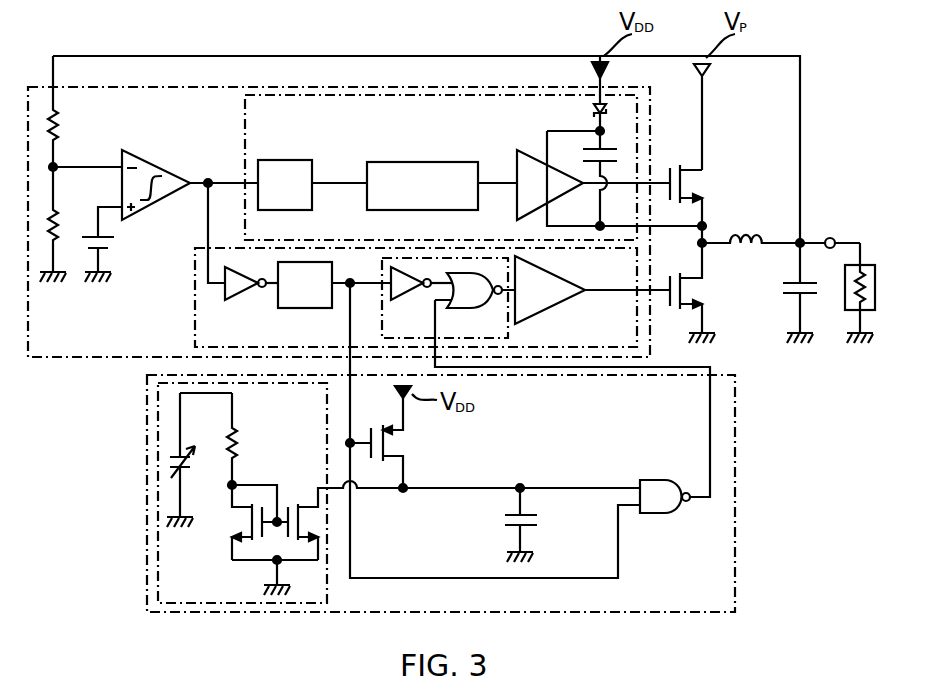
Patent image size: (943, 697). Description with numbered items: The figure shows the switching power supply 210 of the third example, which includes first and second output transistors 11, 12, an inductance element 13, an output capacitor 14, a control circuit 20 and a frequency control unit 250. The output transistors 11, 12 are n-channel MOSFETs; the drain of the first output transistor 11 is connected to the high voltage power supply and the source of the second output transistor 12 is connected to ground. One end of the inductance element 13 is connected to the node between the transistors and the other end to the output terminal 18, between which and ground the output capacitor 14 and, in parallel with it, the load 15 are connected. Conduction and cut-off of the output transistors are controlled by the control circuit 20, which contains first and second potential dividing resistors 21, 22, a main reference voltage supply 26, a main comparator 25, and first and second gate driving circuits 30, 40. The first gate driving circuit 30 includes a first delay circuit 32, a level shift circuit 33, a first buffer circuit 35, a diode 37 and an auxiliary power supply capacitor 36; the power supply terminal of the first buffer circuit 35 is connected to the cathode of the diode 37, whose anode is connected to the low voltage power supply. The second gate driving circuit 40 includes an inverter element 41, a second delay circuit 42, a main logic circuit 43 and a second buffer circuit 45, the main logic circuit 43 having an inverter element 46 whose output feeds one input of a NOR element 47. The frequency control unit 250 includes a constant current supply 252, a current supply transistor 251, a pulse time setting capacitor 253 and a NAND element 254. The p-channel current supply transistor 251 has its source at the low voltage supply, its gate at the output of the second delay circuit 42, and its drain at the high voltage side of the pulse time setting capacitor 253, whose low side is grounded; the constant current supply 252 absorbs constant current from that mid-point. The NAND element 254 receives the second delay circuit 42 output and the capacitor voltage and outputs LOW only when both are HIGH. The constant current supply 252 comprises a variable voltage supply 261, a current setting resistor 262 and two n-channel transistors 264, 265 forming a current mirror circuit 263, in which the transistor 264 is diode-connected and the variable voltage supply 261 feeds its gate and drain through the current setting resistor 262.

The switching power supply 210 is at (88, 44).
The control circuit 20 is at (445, 84).
The first gate driving circuit 30 is at (245, 107).
The second gate driving circuit 40 is at (194, 278).
The main logic circuit 43 is at (380, 258).
The frequency control unit 250 is at (740, 472).
The constant current supply 252 is at (148, 427).
The first potential dividing resistor 21 is at (62, 120).
The second potential dividing resistor 22 is at (64, 220).
The main comparator 25 is at (158, 164).
The main reference voltage supply 26 is at (82, 250).
The first delay circuit 32 is at (280, 160).
The level shift circuit 33 is at (398, 162).
The first buffer circuit 35 is at (517, 160).
The auxiliary power supply capacitor 36 is at (586, 152).
The diode 37 is at (597, 110).
The first output transistor 11 is at (700, 184).
The second output transistor 12 is at (700, 293).
The inductance element 13 is at (748, 231).
The output capacitor 14 is at (785, 290).
The load 15 is at (843, 312).
The output terminal 18 is at (832, 237).
The inverter element 41 is at (240, 301).
The second delay circuit 42 is at (305, 308).
The second buffer circuit 45 is at (553, 303).
The inverter element 46 is at (405, 267).
The NOR element 47 is at (458, 272).
The current supply transistor 251 is at (395, 443).
The pulse time setting capacitor 253 is at (504, 520).
The NAND element 254 is at (657, 478).
The variable voltage supply 261 is at (163, 465).
The current setting resistor 262 is at (243, 437).
The current mirror circuit 263 is at (294, 480).
The transistor 264 is at (237, 523).
The transistor 265 is at (318, 522).